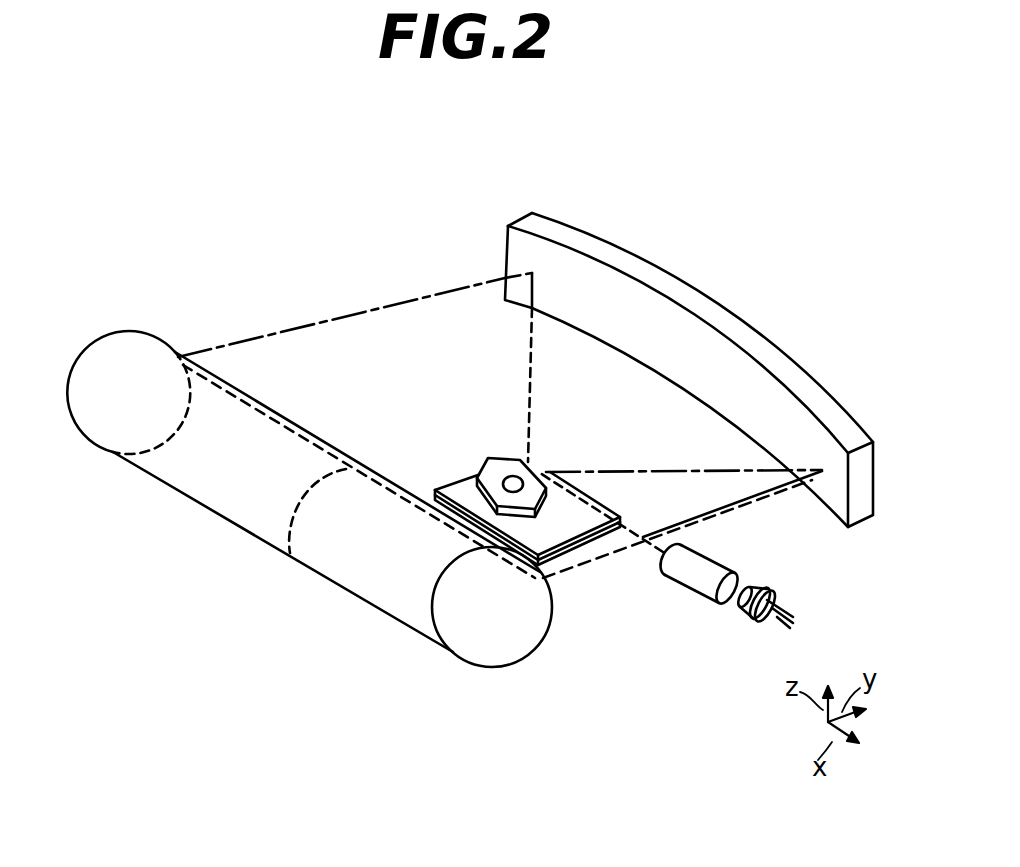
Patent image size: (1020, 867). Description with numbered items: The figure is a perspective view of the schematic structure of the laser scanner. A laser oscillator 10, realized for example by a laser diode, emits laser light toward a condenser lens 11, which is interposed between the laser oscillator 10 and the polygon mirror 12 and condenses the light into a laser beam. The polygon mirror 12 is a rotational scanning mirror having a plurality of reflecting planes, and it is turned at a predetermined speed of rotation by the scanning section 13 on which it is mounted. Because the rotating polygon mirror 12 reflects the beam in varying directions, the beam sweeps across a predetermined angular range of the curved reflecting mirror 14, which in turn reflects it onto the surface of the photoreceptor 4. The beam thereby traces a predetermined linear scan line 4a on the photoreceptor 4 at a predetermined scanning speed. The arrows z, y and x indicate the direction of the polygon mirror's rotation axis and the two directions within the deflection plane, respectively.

The photoreceptor 4 is at (509, 668).
The scan line 4a is at (290, 553).
The laser oscillator 10 is at (777, 592).
The condenser lens 11 is at (742, 565).
The polygon mirror 12 is at (538, 472).
The scanning section 13 is at (550, 518).
The curved reflecting mirror 14 is at (695, 303).